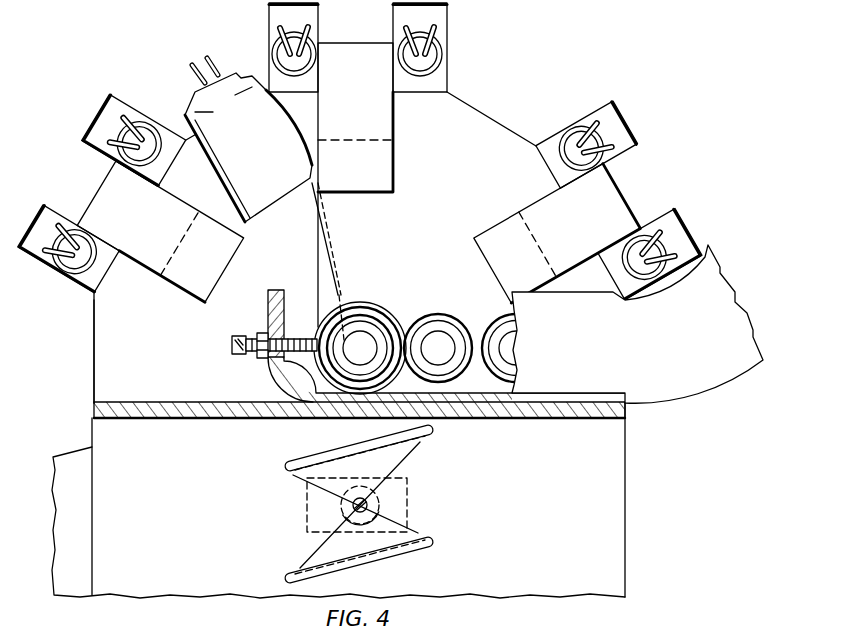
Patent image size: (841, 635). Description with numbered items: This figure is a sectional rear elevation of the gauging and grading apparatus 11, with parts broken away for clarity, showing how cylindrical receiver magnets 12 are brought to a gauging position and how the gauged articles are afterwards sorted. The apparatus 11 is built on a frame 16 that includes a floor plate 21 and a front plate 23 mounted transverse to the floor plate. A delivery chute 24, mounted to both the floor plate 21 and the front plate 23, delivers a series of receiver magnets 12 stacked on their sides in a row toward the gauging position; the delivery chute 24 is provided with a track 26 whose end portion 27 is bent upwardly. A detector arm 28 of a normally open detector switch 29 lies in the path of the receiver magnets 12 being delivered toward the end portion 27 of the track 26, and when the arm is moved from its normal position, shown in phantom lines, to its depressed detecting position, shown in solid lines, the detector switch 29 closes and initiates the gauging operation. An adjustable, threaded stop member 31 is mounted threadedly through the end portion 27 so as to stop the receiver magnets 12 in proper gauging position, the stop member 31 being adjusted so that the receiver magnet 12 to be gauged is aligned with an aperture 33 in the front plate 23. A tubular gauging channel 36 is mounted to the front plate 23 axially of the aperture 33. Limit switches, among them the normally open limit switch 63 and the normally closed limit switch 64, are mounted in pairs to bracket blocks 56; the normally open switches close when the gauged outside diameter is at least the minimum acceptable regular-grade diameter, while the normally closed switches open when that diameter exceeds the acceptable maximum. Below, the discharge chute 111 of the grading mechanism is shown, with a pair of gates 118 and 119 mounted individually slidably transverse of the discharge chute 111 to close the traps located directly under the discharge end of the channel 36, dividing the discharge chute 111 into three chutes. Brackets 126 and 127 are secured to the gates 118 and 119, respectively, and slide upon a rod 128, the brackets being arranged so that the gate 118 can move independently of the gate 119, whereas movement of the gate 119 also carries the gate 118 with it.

The gauging and grading apparatus 11 is at (556, 52).
The receiver magnet 12 is at (387, 322).
The frame 16 is at (90, 372).
The floor plate 21 is at (150, 389).
The front plate 23 is at (485, 116).
The delivery chute 24 is at (722, 281).
The track 26 is at (462, 401).
The end portion 27 is at (270, 302).
The detector arm 28 is at (320, 256).
The detector switch 29 is at (230, 72).
The stop member 31 is at (244, 357).
The aperture 33 is at (343, 302).
The tubular gauging channel 36 is at (380, 302).
The bracket block 56 is at (366, 46).
The limit switch 63 is at (448, 24).
The limit switch 64 is at (270, 17).
The discharge chute 111 is at (58, 452).
The gate 118 is at (337, 455).
The gate 119 is at (410, 550).
The bracket 126 is at (403, 458).
The bracket 127 is at (417, 531).
The rod 128 is at (368, 505).